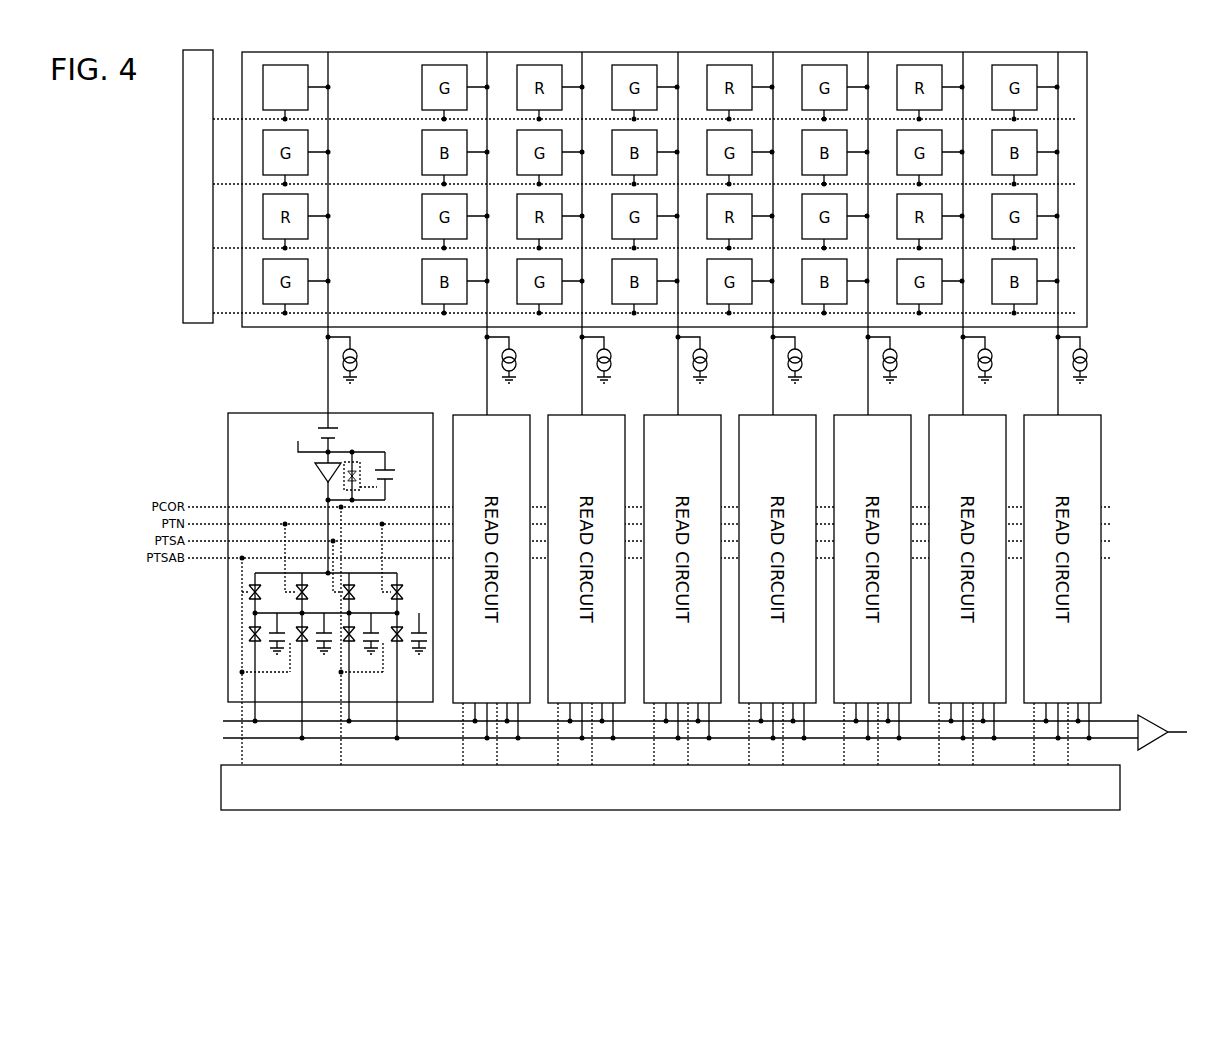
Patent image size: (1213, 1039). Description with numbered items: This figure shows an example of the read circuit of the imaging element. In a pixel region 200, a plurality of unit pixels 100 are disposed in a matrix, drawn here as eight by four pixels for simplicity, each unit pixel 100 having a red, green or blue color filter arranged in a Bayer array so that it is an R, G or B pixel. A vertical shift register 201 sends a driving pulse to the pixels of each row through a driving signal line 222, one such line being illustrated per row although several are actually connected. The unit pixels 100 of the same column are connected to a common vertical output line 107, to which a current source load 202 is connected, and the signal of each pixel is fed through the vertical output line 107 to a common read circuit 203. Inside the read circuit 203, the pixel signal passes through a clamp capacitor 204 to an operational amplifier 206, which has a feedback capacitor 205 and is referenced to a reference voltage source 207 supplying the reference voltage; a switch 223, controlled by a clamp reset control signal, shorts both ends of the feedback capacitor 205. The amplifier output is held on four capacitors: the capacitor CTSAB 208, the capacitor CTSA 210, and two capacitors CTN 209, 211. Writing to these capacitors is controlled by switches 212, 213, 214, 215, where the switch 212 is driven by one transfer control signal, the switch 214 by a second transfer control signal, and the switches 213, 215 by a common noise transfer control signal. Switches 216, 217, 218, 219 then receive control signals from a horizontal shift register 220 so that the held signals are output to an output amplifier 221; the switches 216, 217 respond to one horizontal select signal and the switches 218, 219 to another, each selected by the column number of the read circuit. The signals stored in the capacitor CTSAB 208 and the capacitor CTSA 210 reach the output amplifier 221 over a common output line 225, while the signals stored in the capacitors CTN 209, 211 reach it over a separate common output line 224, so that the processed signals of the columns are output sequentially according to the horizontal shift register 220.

The unit pixel 100 is at (264, 64).
The vertical output line 107 is at (327, 64).
The pixel region 200 is at (430, 52).
The vertical shift register 201 is at (190, 50).
The current source load 202 is at (358, 364).
The read circuit 203 is at (243, 413).
The clamp capacitor 204 is at (340, 428).
The feedback capacitor 205 is at (390, 471).
The operational amplifier 206 is at (312, 468).
The reference voltage source 207 is at (298, 440).
The capacitor CTSAB 208 is at (281, 633).
The capacitor CTN 209 is at (328, 633).
The capacitor CTSA 210 is at (376, 633).
The capacitor CTN 211 is at (425, 633).
The switch 212 is at (267, 593).
The switch 213 is at (314, 593).
The switch 214 is at (361, 593).
The switch 215 is at (408, 593).
The switch 216 is at (259, 645).
The switch 217 is at (306, 645).
The switch 218 is at (353, 645).
The switch 219 is at (401, 645).
The horizontal shift register 220 is at (220, 771).
The output amplifier 221 is at (1150, 719).
The driving signal line 222 is at (395, 117).
The switch 223 is at (387, 488).
The common output line 224 is at (228, 737).
The common output line 225 is at (228, 719).